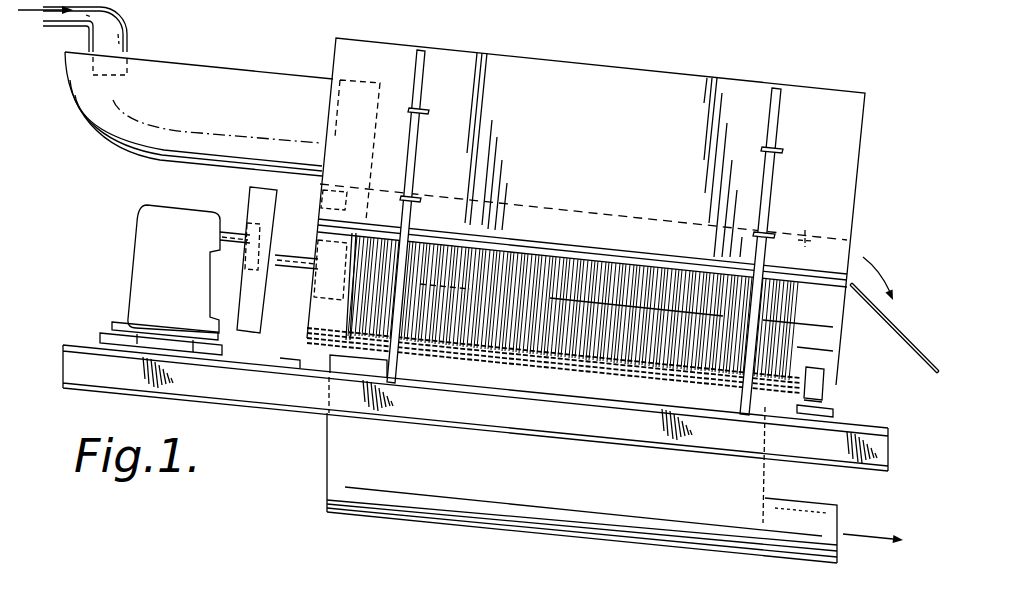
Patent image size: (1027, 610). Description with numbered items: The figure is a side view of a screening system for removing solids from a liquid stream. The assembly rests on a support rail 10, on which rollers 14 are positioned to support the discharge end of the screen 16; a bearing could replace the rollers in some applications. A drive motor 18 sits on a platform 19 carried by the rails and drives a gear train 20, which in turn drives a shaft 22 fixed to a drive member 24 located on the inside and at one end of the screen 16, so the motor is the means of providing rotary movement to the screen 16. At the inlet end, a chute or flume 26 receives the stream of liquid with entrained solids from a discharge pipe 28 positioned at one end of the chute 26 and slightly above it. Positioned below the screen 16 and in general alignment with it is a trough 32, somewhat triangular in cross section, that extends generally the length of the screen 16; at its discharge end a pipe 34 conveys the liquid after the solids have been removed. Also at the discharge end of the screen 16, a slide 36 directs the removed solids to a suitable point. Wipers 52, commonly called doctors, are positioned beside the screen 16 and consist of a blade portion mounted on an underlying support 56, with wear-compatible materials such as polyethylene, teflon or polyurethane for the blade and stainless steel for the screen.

The support rail 10 is at (270, 405).
The rollers 14 is at (831, 373).
The screen 16 is at (534, 275).
The drive motor 18 is at (150, 240).
The platform 19 is at (100, 340).
The gear train 20 is at (257, 195).
The shaft 22 is at (297, 253).
The drive member 24 is at (317, 293).
The chute 26 is at (213, 78).
The discharge pipe 28 is at (124, 25).
The trough 32 is at (578, 532).
The pipe 34 is at (832, 518).
The slide 36 is at (898, 311).
The wipers 52 is at (866, 219).
The underlying support 56 is at (597, 228).